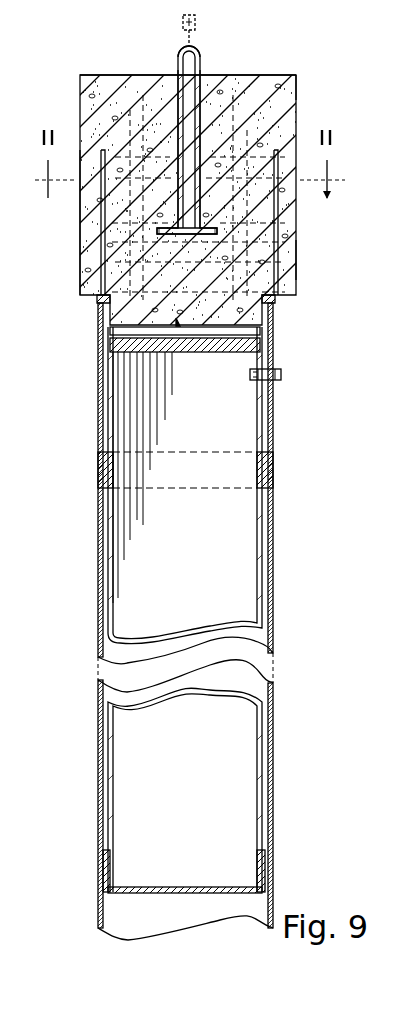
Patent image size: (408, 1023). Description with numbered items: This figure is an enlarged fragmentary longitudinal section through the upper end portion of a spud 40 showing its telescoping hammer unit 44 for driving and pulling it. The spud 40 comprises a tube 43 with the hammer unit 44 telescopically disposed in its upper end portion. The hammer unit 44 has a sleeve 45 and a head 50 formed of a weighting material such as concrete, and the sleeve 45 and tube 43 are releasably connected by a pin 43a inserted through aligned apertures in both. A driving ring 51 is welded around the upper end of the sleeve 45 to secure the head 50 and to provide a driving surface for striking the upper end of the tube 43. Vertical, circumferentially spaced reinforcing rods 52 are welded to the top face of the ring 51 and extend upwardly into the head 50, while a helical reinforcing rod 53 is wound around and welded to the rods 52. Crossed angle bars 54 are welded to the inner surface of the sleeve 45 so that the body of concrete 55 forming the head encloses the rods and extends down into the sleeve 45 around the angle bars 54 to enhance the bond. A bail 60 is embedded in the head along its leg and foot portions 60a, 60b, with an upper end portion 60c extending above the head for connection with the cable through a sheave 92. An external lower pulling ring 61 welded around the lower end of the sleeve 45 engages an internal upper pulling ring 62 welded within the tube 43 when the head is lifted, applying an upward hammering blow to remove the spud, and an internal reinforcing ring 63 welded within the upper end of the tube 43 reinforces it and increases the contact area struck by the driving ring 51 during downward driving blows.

The spud 40 is at (305, 72).
The tube 43 is at (98, 587).
The pin 43a is at (283, 374).
The hammer unit 44 is at (76, 271).
The sleeve 45 is at (114, 729).
The head 50 is at (297, 100).
The driving ring 51 is at (277, 303).
The reinforcing rods 52 is at (100, 152).
The helical reinforcing rod 53 is at (298, 259).
The angle bars 54 is at (122, 334).
The body of concrete 55 is at (288, 71).
The bail 60 is at (178, 64).
The leg portion 60a is at (201, 98).
The foot portion 60b is at (218, 229).
The upper end portion 60c is at (201, 61).
The lower pulling ring 61 is at (104, 857).
The upper pulling ring 62 is at (274, 465).
The reinforcing ring 63 is at (272, 331).
The sheave 92 is at (200, 24).